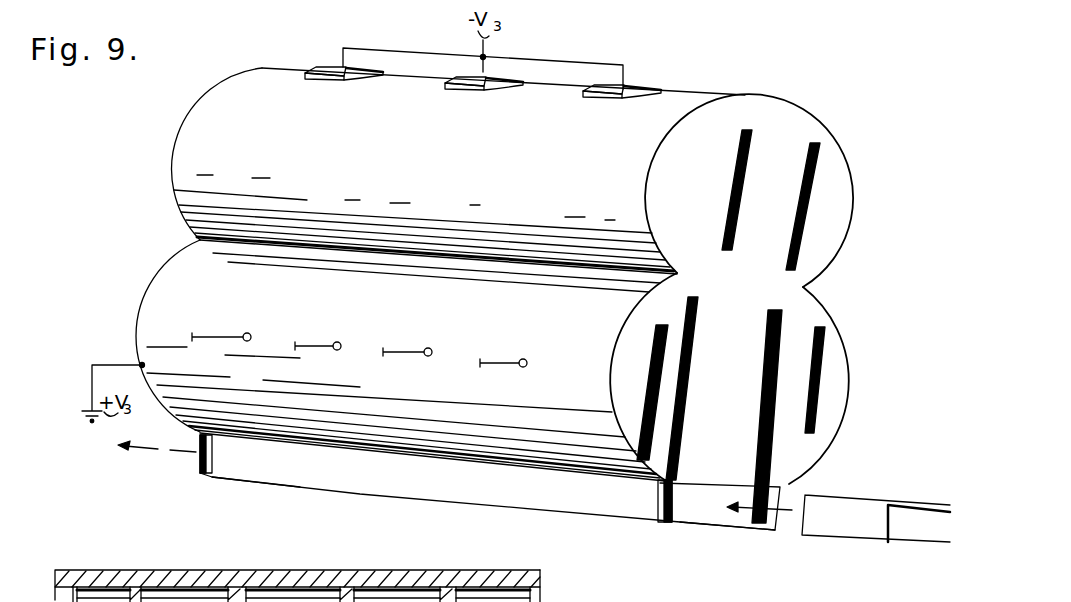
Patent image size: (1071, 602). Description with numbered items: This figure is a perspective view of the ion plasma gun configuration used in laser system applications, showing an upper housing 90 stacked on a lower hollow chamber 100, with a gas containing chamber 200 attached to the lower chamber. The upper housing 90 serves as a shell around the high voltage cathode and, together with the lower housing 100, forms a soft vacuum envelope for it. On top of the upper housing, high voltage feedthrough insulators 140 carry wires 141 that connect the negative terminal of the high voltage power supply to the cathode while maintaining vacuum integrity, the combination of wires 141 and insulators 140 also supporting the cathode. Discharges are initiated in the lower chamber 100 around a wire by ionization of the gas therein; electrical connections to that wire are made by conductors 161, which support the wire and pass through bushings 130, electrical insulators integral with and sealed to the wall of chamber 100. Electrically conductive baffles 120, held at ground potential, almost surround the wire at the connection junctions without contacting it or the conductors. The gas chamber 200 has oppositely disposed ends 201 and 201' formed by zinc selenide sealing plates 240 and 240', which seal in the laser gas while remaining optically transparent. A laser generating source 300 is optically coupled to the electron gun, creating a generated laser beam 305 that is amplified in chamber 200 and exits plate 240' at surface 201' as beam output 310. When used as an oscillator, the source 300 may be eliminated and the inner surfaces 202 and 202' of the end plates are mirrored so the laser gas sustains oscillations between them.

The upper housing 90 is at (851, 157).
The lower hollow chamber 100 is at (856, 397).
The electrically conductive baffles 120 is at (220, 582).
The bushings 130 is at (335, 342).
The high voltage feedthrough insulators 140 is at (383, 72).
The wires 141 is at (624, 64).
The conductors 161 is at (521, 359).
The chamber 200 is at (727, 505).
The end 201 is at (727, 561).
The inner surface 202 is at (635, 524).
The sealing plate 240 is at (721, 433).
The end 201' is at (206, 481).
The inner surface 202' is at (231, 477).
The sealing plate 240' is at (183, 475).
The laser generating source 300 is at (886, 494).
The generated laser beam 305 is at (778, 506).
The beam output 310 is at (137, 461).